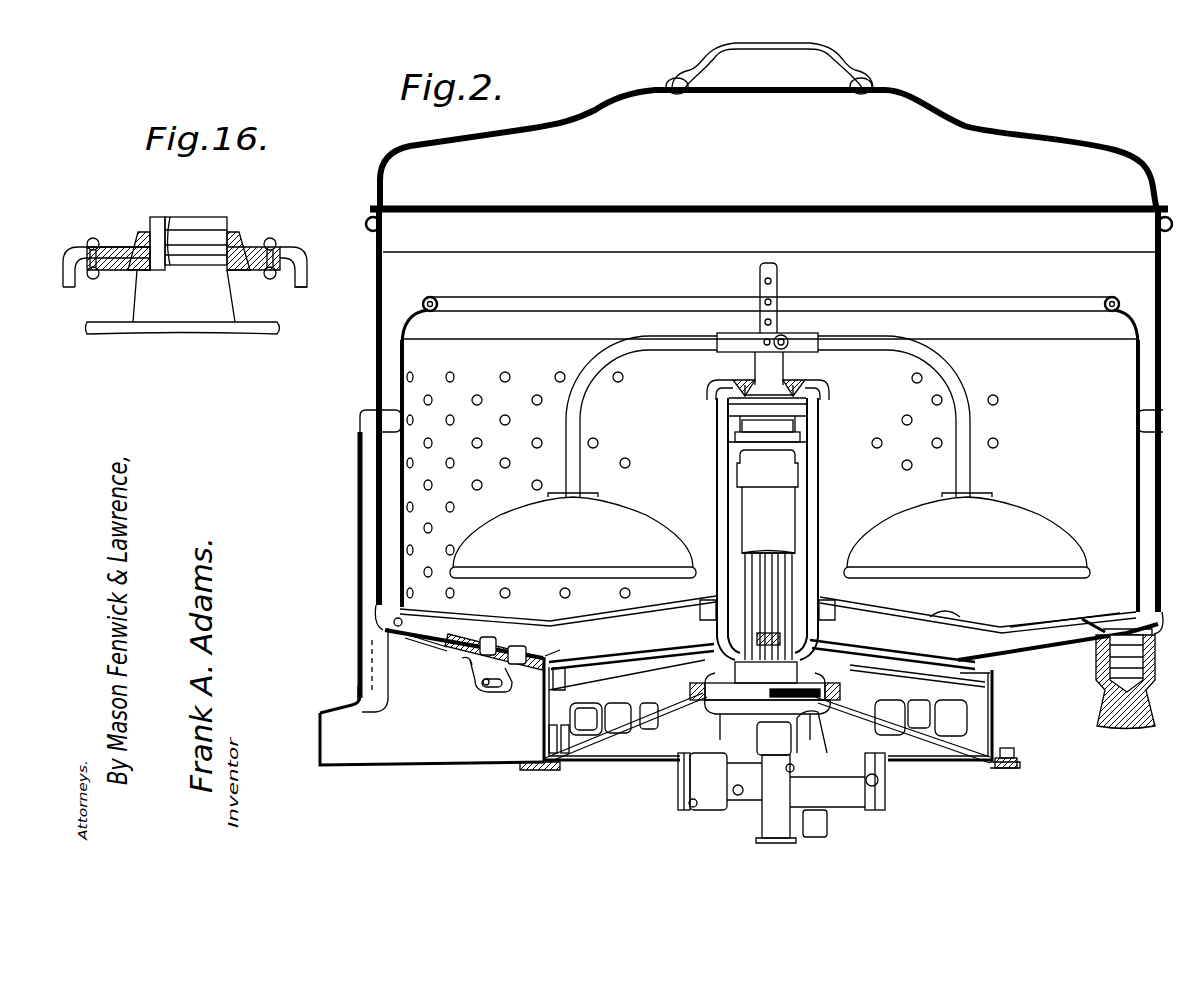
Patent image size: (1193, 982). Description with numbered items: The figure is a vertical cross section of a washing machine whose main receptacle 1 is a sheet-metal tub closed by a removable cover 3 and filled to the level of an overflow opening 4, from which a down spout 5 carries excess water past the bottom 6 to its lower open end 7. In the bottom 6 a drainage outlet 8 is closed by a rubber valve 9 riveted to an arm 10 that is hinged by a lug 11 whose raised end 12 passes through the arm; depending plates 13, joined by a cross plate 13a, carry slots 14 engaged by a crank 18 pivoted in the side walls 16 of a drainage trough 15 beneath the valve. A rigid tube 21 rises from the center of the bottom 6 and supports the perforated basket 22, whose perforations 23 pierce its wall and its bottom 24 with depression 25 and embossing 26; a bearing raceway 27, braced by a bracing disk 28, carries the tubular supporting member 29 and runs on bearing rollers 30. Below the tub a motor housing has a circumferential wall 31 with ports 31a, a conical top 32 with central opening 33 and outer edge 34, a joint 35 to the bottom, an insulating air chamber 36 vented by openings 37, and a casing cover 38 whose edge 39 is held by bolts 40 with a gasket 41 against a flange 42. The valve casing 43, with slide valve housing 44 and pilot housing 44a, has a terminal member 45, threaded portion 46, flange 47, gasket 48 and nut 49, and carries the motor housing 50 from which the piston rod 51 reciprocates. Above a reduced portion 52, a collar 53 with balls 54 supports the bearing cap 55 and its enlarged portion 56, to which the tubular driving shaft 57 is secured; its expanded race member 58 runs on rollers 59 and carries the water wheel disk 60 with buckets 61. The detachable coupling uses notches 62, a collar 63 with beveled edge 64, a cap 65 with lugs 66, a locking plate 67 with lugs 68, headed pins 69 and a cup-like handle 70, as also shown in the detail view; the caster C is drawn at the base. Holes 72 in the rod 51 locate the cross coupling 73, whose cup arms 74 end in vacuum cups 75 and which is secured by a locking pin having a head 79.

In FIG. 2, the main receptacle 1 is at (1160, 338).
In FIG. 2, the removable cover 3 is at (1063, 137).
In FIG. 2, the overflow opening 4 is at (388, 332).
In FIG. 2, the down spout 5 is at (372, 407).
In FIG. 2, the bottom 6 is at (420, 642).
In FIG. 2, the lower open end of down spout 7 is at (357, 686).
In FIG. 2, the drainage outlet 8 is at (548, 668).
In FIG. 2, the valve 9 is at (500, 648).
In FIG. 2, the arm 10 is at (442, 629).
In FIG. 2, the lug 11 is at (407, 626).
In FIG. 2, the raised end of lug 12 is at (395, 626).
In FIG. 2, the depending plates 13 is at (478, 672).
In FIG. 2, the cross plate 13a is at (468, 666).
In FIG. 2, the slots 14 is at (494, 689).
In FIG. 2, the drainage trough 15 is at (425, 764).
In FIG. 2, the side walls of trough 16 is at (374, 587).
In FIG. 2, the crank 18 is at (486, 680).
In FIG. 2, the rigid tube 21 is at (820, 493).
In FIG. 2, the perforated basket 22 is at (1134, 376).
In FIG. 2, the perforations 23 is at (458, 375).
In FIG. 2, the basket bottom 24 is at (1042, 628).
In FIG. 2, the depression 25 is at (1007, 624).
In FIG. 2, the circumferential embossing 26 is at (946, 614).
In FIG. 2, the annular bearing raceway 27 is at (830, 596).
In FIG. 2, the bracing disk 28 is at (877, 630).
In FIG. 2, the tubular supporting member 29 is at (790, 556).
In FIG. 2, the bearing rollers 30 is at (700, 607).
In FIG. 2, the circumferential wall 31 is at (540, 732).
In FIG. 2, the ports 31a is at (563, 760).
In FIG. 2, the conical top 32 is at (620, 676).
In FIG. 2, the central opening 33 is at (690, 655).
In FIG. 2, the outer edge of top 34 is at (921, 718).
In FIG. 2, the junction of wall and bottom 35 is at (1005, 672).
In FIG. 2, the air chamber 36 is at (905, 665).
In FIG. 2, the openings 37 is at (545, 690).
In FIG. 2, the casing cover 38 is at (952, 762).
In FIG. 2, the outer edge of cover 39 is at (998, 772).
In FIG. 2, the bolts 40 is at (1013, 760).
In FIG. 2, the packing gasket 41 is at (1015, 768).
In FIG. 2, the flange 42 is at (535, 764).
In FIG. 2, the combined motor support and valve casing 43 is at (737, 737).
In FIG. 2, the slide valve housing 44 is at (718, 790).
In FIG. 2, the pilot housing 44a is at (782, 796).
In FIG. 2, the cylindrical terminal member 45 is at (742, 702).
In FIG. 2, the threaded portion 46 is at (766, 671).
In FIG. 2, the flange 47 is at (720, 697).
In FIG. 2, the gasket 48 is at (828, 710).
In FIG. 2, the nut 49 is at (835, 700).
In FIG. 2, the motor housing 50 is at (768, 594).
In FIG. 2, the piston rod 51 is at (779, 292).
In FIG. 2, the reduced portion 52 is at (815, 410).
In FIG. 2, the collar 53 is at (800, 428).
In FIG. 2, the bearing balls 54 is at (822, 420).
In FIG. 16, the bearing cap 55 is at (228, 300).
In FIG. 2, the bearing cap 55 is at (726, 410).
In FIG. 2, the enlarged cylindrical portion 56 is at (735, 426).
In FIG. 2, the tubular driving shaft 57 is at (737, 456).
In FIG. 2, the expanded bearing race member 58 is at (838, 690).
In FIG. 2, the bearing rollers 59 is at (690, 712).
In FIG. 2, the disk 60 is at (652, 676).
In FIG. 2, the buckets 61 is at (588, 722).
In FIG. 16, the notches 62 is at (152, 232).
In FIG. 2, the notches 62 is at (745, 381).
In FIG. 16, the collar 63 is at (218, 252).
In FIG. 16, the beveled upper edge 64 is at (130, 246).
In FIG. 16, the cap 65 is at (244, 252).
In FIG. 2, the cap 65 is at (792, 382).
In FIG. 16, the lugs 66 is at (138, 240).
In FIG. 16, the locking plate 67 is at (128, 270).
In FIG. 16, the inwardly directed lugs 68 is at (222, 272).
In FIG. 16, the headed pins 69 is at (306, 268).
In FIG. 2, the headed pins 69 is at (816, 396).
In FIG. 16, the cup-like handle 70 is at (298, 256).
In FIG. 2, the cup-like handle 70 is at (712, 393).
In FIG. 2, the small holes 72 is at (764, 302).
In FIG. 2, the cross coupling 73 is at (722, 334).
In FIG. 2, the cup arms 74 is at (925, 356).
In FIG. 2, the cup shaped member 75 is at (770, 535).
In FIG. 2, the head 79 is at (788, 342).
In FIG. 2, the caster C is at (1139, 679).